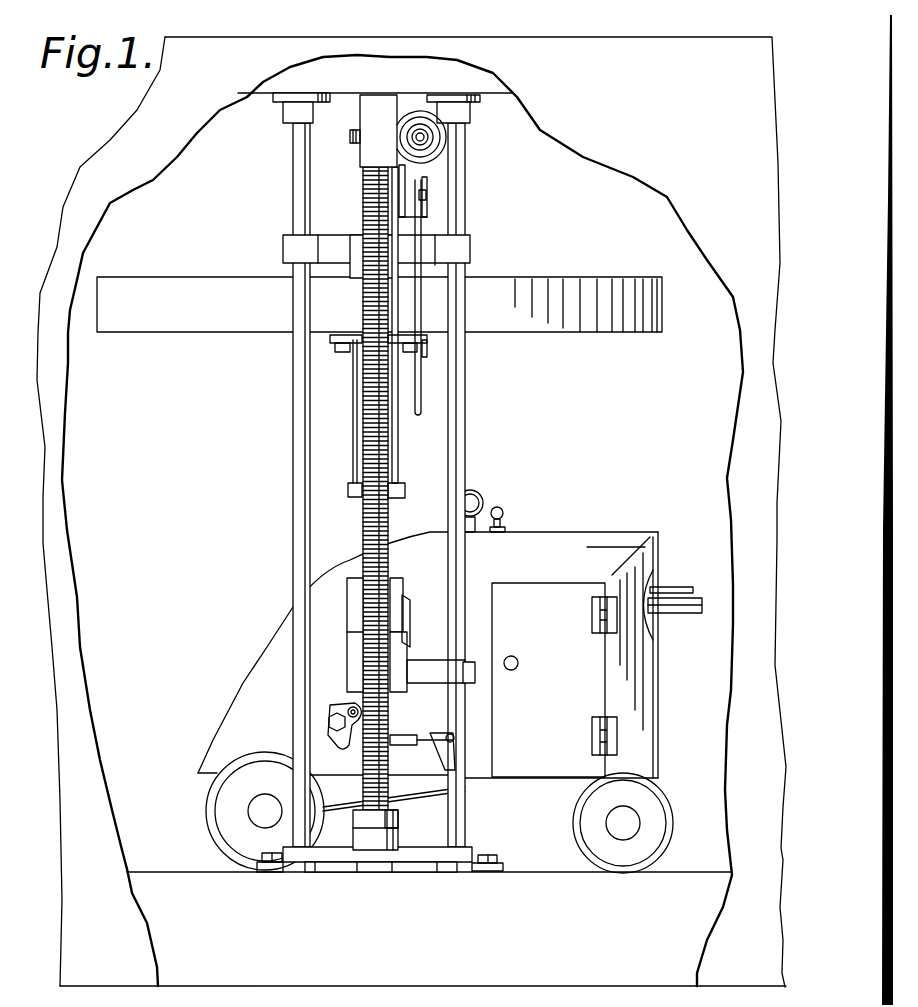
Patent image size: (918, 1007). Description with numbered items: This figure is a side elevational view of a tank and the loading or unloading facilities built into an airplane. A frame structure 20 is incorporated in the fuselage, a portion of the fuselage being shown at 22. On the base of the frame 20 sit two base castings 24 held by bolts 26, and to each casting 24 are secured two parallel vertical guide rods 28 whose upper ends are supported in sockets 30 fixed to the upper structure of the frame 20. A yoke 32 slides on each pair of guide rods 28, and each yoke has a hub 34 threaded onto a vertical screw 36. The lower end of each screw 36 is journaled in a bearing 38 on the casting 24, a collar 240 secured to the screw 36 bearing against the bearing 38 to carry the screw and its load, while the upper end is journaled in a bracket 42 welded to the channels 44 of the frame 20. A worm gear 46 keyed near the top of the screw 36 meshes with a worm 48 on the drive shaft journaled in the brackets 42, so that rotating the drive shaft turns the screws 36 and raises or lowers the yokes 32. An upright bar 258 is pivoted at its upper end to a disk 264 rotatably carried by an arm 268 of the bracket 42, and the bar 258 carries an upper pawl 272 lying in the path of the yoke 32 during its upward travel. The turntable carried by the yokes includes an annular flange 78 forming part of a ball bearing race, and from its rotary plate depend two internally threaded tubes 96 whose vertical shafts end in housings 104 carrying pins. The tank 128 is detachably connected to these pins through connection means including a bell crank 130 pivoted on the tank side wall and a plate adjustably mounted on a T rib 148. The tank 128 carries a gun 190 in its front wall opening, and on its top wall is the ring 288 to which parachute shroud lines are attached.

The frame structure 20 is at (212, 977).
The fuselage 22 is at (768, 97).
The base casting 24 is at (340, 858).
The bolts 26 is at (271, 852).
The vertical guide rods 28 is at (460, 564).
The sockets 30 is at (283, 113).
The yoke 32 is at (316, 242).
The hub 34 is at (356, 272).
The vertical screw 36 is at (368, 380).
The bearing 38 is at (395, 845).
The bracket 42 is at (360, 115).
The channels 44 is at (462, 75).
The worm gear 46 is at (350, 137).
The worm 48 is at (432, 143).
The annular flange 78 is at (662, 308).
The internally threaded tube 96 is at (365, 443).
The housing 104 is at (352, 590).
The tank 128 is at (542, 546).
The bell crank 130 is at (343, 732).
The T rib 148 is at (424, 668).
The gun 190 is at (668, 620).
The collar 240 is at (398, 812).
The upright bar 258 is at (430, 413).
The disk 264 is at (420, 200).
The arm 268 is at (406, 172).
The upper pawl 272 is at (428, 350).
The ring 288 is at (484, 486).